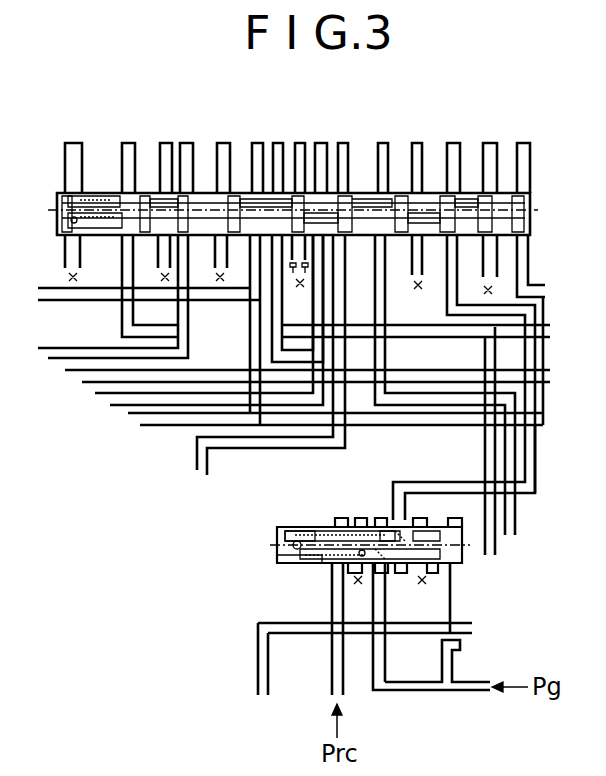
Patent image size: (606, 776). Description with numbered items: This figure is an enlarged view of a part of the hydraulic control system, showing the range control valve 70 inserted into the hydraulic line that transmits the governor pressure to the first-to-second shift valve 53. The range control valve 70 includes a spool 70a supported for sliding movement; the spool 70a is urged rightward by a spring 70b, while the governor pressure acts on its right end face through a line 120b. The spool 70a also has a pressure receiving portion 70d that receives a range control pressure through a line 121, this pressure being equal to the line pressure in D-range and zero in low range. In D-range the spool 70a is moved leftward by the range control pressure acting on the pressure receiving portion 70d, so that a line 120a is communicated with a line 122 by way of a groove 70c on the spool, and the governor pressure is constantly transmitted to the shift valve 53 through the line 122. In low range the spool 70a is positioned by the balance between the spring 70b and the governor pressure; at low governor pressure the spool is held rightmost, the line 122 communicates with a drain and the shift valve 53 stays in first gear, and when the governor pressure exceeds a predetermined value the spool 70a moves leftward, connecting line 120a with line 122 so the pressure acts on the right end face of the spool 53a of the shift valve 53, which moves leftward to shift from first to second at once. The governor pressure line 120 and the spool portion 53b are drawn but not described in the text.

The 1-2 shift valve 53 is at (398, 131).
The spool of 1-2 shift valve 53a is at (357, 193).
The spool of shift valve 53b is at (114, 193).
The range control valve 70 is at (270, 529).
The spool 70a is at (438, 530).
The spring 70b is at (318, 527).
The groove 70c is at (392, 527).
The pressure receiving portion 70d is at (322, 567).
The governor pressure line 120 is at (477, 697).
The line 120a is at (378, 660).
The line 120b is at (458, 593).
The line 121 is at (340, 597).
The line 122 is at (535, 470).